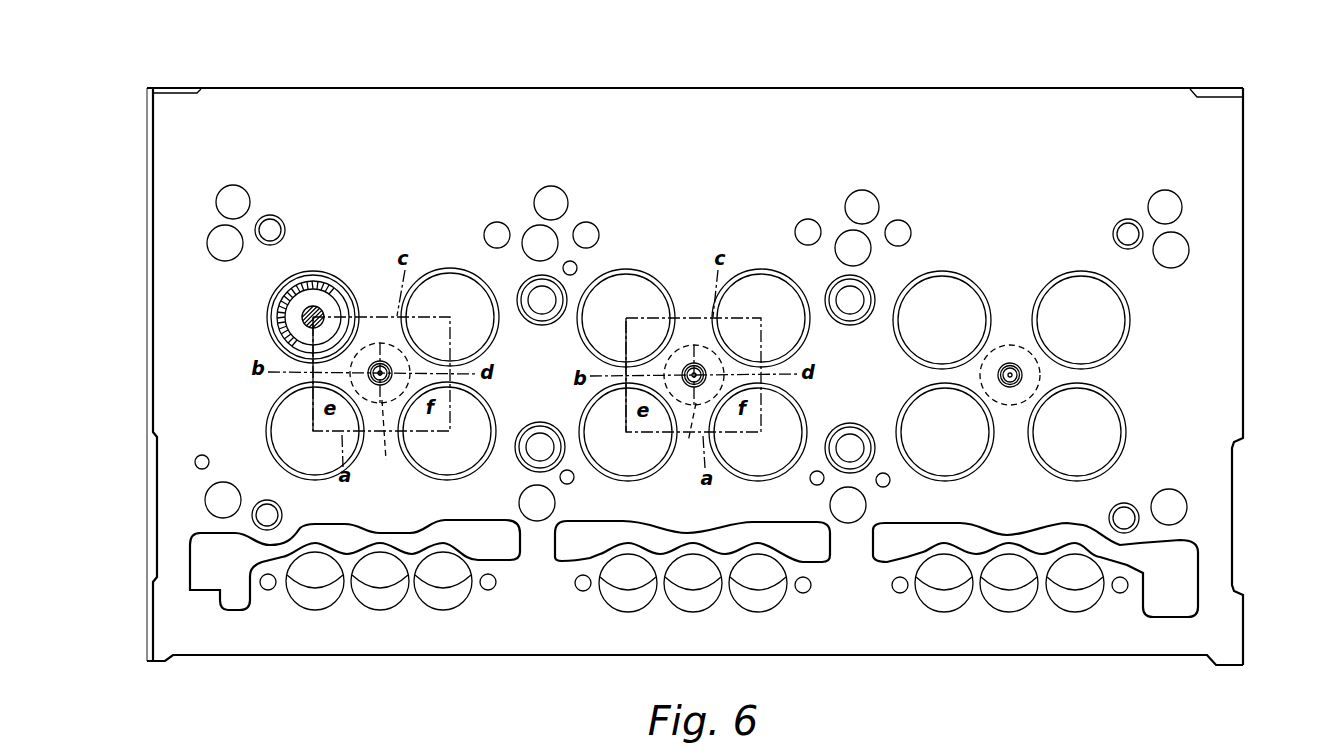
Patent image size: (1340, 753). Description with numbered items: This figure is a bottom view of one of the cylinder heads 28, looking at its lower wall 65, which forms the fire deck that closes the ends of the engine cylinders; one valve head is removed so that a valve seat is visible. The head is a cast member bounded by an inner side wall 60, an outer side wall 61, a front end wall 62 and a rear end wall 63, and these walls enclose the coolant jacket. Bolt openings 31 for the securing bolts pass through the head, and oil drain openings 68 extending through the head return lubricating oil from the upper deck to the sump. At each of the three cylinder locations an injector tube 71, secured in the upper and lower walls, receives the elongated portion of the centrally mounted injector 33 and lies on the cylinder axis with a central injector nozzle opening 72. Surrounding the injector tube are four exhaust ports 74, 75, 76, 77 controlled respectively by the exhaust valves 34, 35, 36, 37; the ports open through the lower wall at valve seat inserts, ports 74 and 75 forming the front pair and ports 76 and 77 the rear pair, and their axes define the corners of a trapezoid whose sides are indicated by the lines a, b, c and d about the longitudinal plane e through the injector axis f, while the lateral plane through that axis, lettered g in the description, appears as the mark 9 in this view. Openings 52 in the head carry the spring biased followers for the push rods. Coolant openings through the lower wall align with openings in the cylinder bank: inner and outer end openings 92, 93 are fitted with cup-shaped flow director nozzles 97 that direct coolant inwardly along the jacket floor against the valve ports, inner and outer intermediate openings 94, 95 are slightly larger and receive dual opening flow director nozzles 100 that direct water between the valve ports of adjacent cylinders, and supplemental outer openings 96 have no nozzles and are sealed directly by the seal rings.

The center line 9 is at (537, 440).
The cylinder head 28 is at (1235, 415).
The cylinder head bolt openings 31 is at (222, 257).
The injector 33 is at (998, 375).
The exhaust valve 34 is at (300, 316).
The exhaust valve 35 is at (310, 455).
The exhaust valve 36 is at (470, 333).
The exhaust valve 37 is at (462, 411).
The follower openings 52 is at (422, 597).
The inner side wall 60 is at (485, 657).
The outer side wall 61 is at (540, 87).
The front end wall 62 is at (147, 377).
The rear end wall 63 is at (1245, 312).
The lower wall 65 is at (170, 318).
The oil drain openings 68 is at (227, 190).
The injector tube 71 is at (352, 420).
The injector nozzle opening 72 is at (386, 368).
The exhaust port 74 is at (322, 295).
The exhaust port 75 is at (292, 422).
The exhaust port 76 is at (455, 290).
The exhaust port 77 is at (436, 455).
The inner end coolant opening 92 is at (283, 514).
The outer end coolant opening 93 is at (268, 216).
The inner intermediate coolant opening 94 is at (517, 452).
The outer intermediate coolant opening 95 is at (552, 290).
The supplemental outer coolant openings 96 is at (492, 223).
The cup-shaped flow director nozzles 97 is at (281, 221).
The dual opening flow director nozzles 100 is at (544, 322).